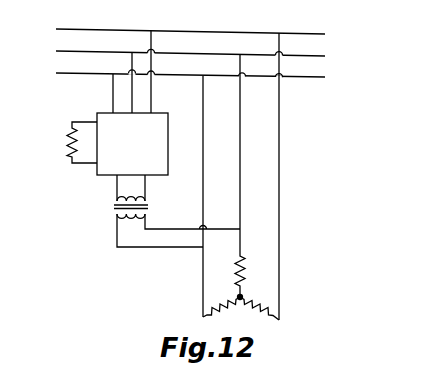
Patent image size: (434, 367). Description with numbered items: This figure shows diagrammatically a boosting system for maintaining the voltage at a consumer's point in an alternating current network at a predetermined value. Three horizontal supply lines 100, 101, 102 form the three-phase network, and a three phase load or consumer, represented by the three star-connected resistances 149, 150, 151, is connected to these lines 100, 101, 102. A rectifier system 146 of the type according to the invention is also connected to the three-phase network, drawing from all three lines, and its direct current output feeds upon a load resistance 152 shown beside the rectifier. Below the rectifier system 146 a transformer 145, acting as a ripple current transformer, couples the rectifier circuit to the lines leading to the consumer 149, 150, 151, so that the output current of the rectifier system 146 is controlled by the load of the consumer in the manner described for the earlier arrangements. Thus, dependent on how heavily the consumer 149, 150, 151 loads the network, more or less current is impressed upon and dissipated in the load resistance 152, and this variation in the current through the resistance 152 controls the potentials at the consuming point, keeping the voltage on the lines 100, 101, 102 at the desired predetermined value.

The line 100 is at (203, 77).
The line 101 is at (203, 56).
The line 102 is at (203, 34).
The rectifier system 146 is at (98, 174).
The load resistance 152 is at (70, 152).
The transformer 145 is at (147, 206).
The three phase load 149 is at (244, 270).
The three phase load 150 is at (221, 315).
The three phase load 151 is at (259, 315).